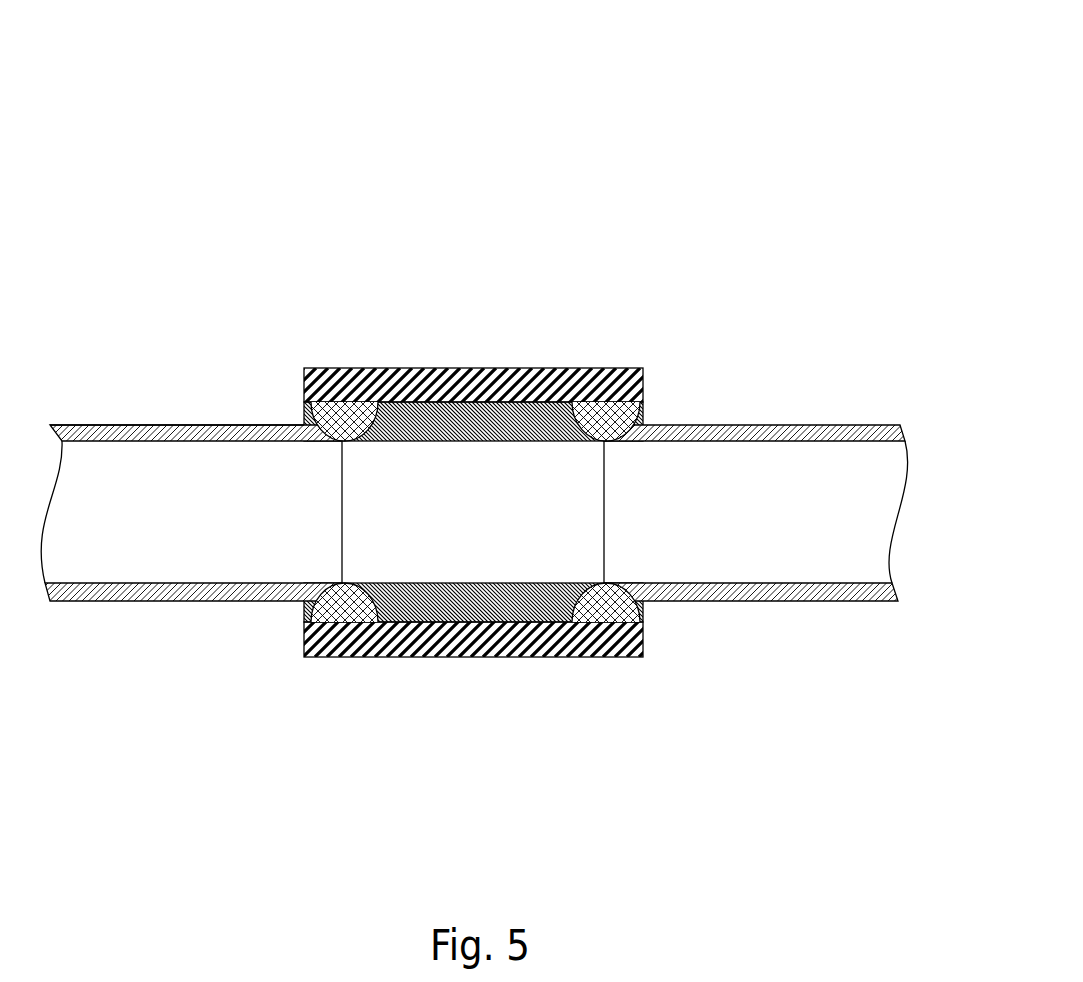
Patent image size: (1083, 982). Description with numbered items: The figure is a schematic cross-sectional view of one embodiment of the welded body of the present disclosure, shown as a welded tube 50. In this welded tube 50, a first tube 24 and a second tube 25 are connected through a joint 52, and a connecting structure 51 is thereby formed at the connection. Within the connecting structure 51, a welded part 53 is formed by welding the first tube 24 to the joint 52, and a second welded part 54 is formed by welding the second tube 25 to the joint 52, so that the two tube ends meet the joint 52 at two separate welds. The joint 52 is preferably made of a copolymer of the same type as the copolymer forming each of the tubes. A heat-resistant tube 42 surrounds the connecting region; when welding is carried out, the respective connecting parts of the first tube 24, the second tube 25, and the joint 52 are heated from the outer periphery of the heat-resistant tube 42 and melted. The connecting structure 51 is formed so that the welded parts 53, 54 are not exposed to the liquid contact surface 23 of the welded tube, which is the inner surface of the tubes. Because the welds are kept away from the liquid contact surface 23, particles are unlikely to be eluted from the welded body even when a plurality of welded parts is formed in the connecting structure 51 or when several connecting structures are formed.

The welded tube 50 is at (541, 340).
The connecting structure 51 is at (489, 398).
The heat-resistant tube 42 is at (443, 377).
The joint 52 is at (545, 417).
The welded part 53 is at (345, 412).
The welded part 54 is at (607, 413).
The liquid contact surface 23 is at (197, 438).
The first tube 24 is at (113, 434).
The second tube 25 is at (767, 432).